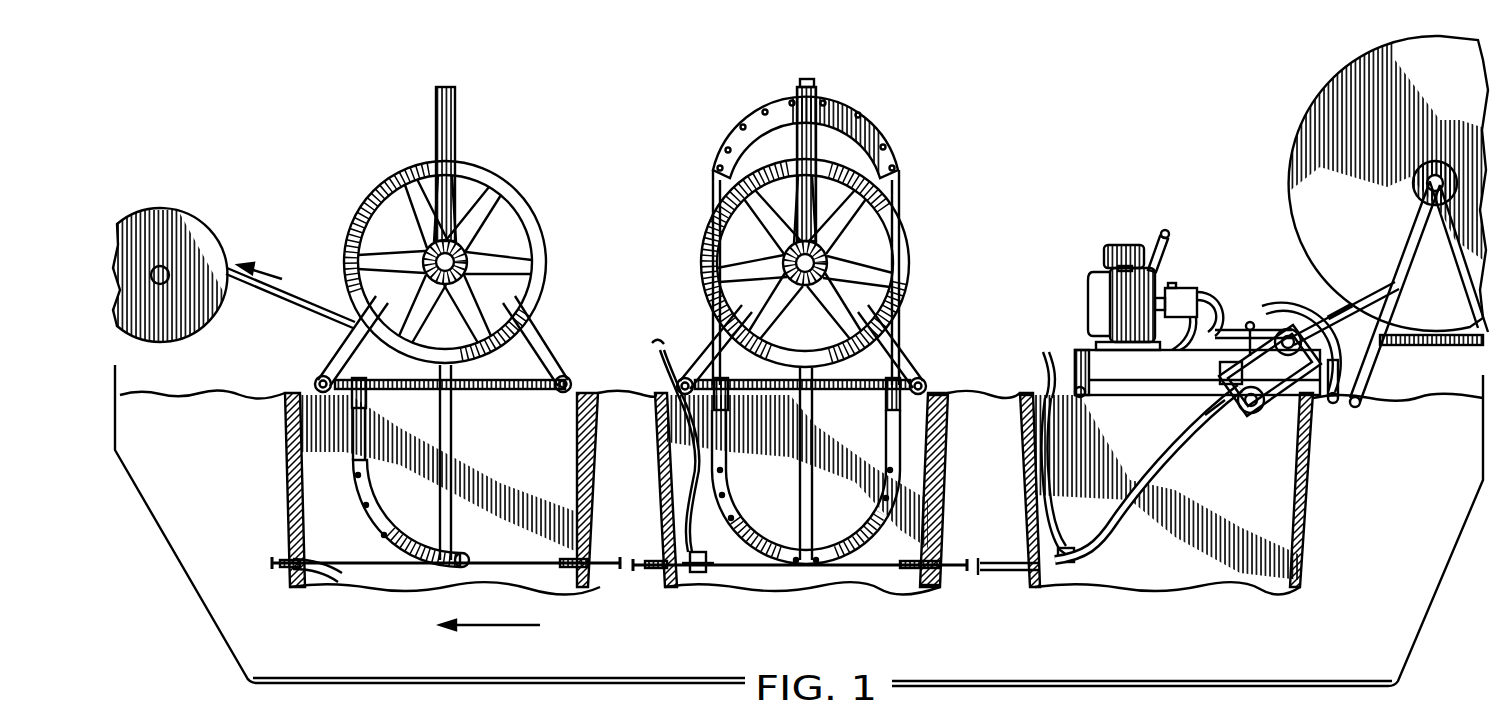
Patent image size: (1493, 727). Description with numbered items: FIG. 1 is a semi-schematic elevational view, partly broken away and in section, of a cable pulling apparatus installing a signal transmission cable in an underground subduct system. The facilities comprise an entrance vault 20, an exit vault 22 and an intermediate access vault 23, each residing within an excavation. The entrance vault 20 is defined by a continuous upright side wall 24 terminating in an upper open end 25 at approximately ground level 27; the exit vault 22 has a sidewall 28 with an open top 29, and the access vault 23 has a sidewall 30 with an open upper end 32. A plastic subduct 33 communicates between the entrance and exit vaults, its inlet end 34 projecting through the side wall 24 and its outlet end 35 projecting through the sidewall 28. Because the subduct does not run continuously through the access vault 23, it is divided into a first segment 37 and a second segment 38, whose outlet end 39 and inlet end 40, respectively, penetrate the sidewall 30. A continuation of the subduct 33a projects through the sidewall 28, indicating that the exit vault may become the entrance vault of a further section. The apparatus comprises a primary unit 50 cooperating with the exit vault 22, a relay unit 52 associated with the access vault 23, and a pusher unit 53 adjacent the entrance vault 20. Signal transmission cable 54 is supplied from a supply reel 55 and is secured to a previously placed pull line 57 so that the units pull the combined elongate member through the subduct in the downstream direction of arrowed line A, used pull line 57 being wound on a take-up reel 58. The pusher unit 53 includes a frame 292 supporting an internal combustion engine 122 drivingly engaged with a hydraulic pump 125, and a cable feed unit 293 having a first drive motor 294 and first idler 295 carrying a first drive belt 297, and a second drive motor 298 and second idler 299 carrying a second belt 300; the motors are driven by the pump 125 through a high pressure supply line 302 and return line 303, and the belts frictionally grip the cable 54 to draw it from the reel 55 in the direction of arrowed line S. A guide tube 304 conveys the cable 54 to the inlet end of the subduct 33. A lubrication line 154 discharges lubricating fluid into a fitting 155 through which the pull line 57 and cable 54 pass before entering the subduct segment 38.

The entrance vault 20 is at (1175, 583).
The exit vault 22 is at (388, 575).
The intermediate access vault 23 is at (752, 588).
The side wall 24 is at (1305, 508).
The upper open end 25 is at (1018, 395).
The ground level 27 is at (1418, 396).
The sidewall 28 is at (282, 488).
The open top 29 is at (288, 393).
The sidewall 30 is at (950, 478).
The open upper end 32 is at (962, 383).
The subduct 33 is at (1028, 588).
The continuation of the subduct 33a is at (275, 580).
The inlet end 34 is at (1065, 580).
The outlet end 35 is at (546, 556).
The first segment 37 is at (950, 588).
The second segment 38 is at (590, 580).
The outlet end 39 is at (882, 590).
The inlet end 40 is at (668, 598).
The primary unit 50 is at (392, 168).
The relay unit 52 is at (895, 125).
The pusher unit 53 is at (1108, 248).
The signal transmission cable 54 is at (1325, 320).
The supply reel 55 is at (1330, 82).
The pull line 57 is at (321, 276).
The take-up reel 58 is at (222, 238).
The internal combustion engine 122 is at (1088, 300).
The hydraulic pump 125 is at (1183, 288).
The lubrication line 154 is at (670, 333).
The fitting 155 is at (700, 580).
The frame 292 is at (1115, 368).
The cable feed unit 293 is at (1228, 414).
The first drive motor 294 is at (1210, 398).
The first idler 295 is at (1290, 328).
The first drive belt 297 is at (1262, 335).
The second drive motor 298 is at (1325, 400).
The second idler 299 is at (1245, 432).
The second belt 300 is at (1255, 414).
The high pressure supply line 302 is at (1228, 310).
The return line 303 is at (1178, 355).
The guide tube 304 is at (1104, 530).
The arrowed line A is at (508, 626).
The arrowed line S is at (1370, 300).